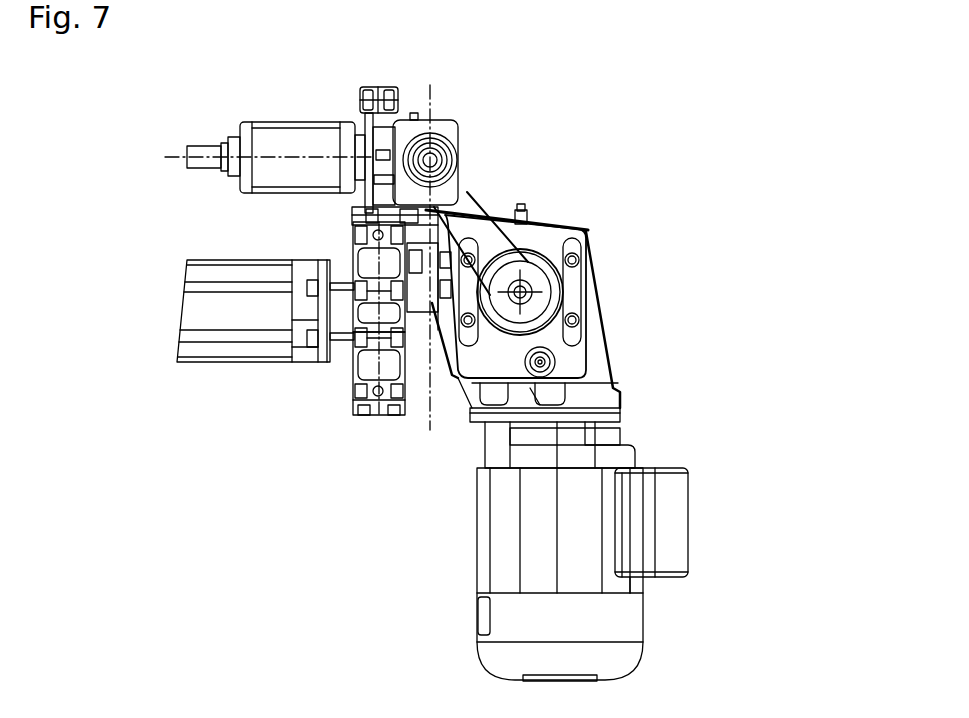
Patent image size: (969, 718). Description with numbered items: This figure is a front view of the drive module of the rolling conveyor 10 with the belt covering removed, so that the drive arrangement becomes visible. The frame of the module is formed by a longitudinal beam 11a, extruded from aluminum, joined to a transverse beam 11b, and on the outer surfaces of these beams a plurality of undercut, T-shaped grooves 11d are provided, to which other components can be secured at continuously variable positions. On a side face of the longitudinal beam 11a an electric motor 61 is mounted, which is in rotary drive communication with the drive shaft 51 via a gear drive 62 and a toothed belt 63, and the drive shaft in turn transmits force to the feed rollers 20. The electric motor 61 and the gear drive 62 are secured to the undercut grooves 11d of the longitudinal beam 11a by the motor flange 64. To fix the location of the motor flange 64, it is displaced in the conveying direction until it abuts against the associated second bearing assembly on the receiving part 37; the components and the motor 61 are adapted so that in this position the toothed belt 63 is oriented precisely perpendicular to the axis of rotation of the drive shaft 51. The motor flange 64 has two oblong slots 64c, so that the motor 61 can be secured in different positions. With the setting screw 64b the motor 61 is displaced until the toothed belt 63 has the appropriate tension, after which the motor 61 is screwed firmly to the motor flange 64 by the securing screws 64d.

The rolling conveyor 10 is at (808, 70).
The feed rollers 20 is at (272, 137).
The receiving part 37 is at (376, 178).
The drive shaft 51 is at (453, 135).
The toothed belt 63 is at (525, 206).
The gear drive 62 is at (597, 350).
The motor flange 64 is at (605, 380).
The setting screw 64b is at (545, 222).
The oblong slots 64c is at (460, 208).
The securing screws 64d is at (600, 277).
The electric motor 61 is at (553, 572).
The longitudinal beams 11a is at (355, 385).
The transverse beam 11b is at (210, 312).
The T-shaped grooves 11d is at (353, 243).